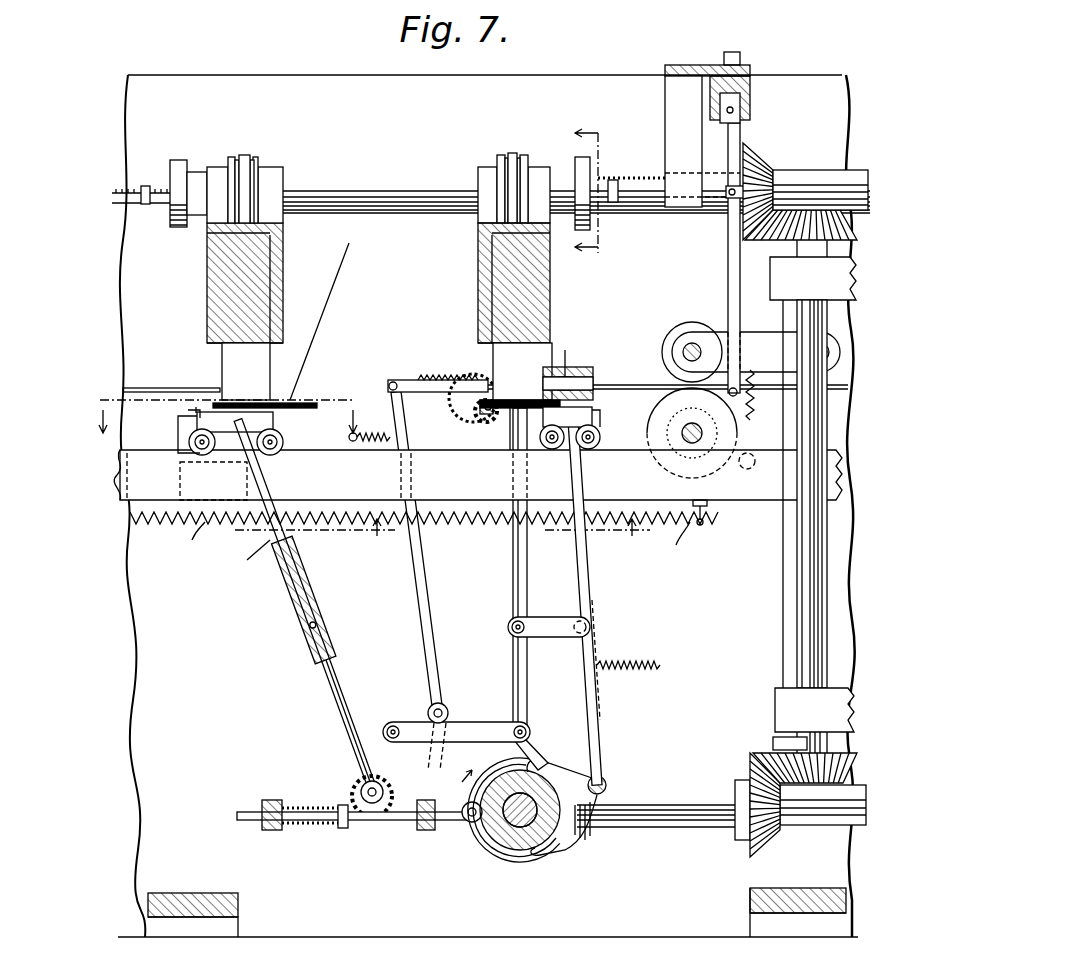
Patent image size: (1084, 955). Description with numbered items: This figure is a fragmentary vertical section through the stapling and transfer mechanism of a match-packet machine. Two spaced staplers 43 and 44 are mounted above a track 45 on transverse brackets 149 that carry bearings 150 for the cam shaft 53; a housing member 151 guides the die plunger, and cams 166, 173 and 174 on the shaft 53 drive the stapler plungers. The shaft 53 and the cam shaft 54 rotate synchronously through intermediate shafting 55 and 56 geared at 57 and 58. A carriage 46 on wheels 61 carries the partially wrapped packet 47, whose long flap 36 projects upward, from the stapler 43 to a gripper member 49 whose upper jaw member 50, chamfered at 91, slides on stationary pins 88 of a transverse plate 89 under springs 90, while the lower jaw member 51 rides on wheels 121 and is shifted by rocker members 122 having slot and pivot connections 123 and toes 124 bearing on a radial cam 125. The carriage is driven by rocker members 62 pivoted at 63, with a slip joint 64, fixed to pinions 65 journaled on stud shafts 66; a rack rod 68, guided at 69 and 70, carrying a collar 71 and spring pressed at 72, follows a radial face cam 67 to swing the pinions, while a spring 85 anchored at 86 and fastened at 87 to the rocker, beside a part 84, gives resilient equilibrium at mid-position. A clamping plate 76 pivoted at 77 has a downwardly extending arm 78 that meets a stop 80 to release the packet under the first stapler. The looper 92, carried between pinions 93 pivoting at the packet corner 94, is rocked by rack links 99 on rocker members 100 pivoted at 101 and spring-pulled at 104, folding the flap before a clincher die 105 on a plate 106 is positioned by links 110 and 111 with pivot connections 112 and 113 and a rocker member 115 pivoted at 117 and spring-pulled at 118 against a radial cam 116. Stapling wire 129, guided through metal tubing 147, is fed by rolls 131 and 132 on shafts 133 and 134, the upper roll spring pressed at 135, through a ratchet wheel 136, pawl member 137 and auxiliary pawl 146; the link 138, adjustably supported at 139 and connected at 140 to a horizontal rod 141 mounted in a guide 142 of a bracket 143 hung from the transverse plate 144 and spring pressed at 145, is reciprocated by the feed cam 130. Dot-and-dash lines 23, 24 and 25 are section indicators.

The section line 23 is at (597, 191).
The section line 24 is at (442, 538).
The section line 25 is at (225, 414).
The long flap 36 is at (318, 328).
The stapler 43 is at (283, 250).
The stapler 44 is at (478, 265).
The track 45 is at (478, 475).
The carriage 46 is at (273, 422).
The partially wrapped packet 47 is at (300, 403).
The gripper member 49 is at (520, 375).
The upper jaw member 50 is at (593, 385).
The lower jaw member 51 is at (592, 418).
The shaft 53 is at (368, 189).
The shaft 54 is at (510, 835).
The intermediate shafting 55 is at (783, 630).
The intermediate shafting 56 is at (680, 803).
The gearing 57 is at (765, 245).
The gearing 58 is at (756, 752).
The wheels 61 is at (284, 442).
The rocker members 62 is at (330, 692).
The pivot connection 63 is at (236, 425).
The slip joint 64 is at (282, 610).
The pinions 65 is at (392, 786).
The stud shafts 66 is at (362, 790).
The radial face cam 67 is at (478, 845).
The rack rod 68 is at (378, 822).
The guide 69 is at (426, 832).
The guide 70 is at (272, 831).
The collar 71 is at (342, 830).
The spring 72 is at (310, 826).
The plate 76 is at (215, 404).
The pivot 77 is at (194, 408).
The downwardly extending arm 78 is at (188, 410).
The stop 80 is at (178, 430).
The rack 84 is at (236, 526).
The spring 85 is at (432, 545).
The anchor point 86 is at (705, 518).
The intermediate point 87 is at (248, 559).
The stationary pins 88 is at (567, 360).
The transverse plate 89 is at (580, 367).
The springs 90 is at (548, 367).
The chamfer 91 is at (512, 420).
The looper 92 is at (476, 415).
The pinions 93 is at (450, 402).
The upper corner 94 is at (472, 374).
The rack links 99 is at (440, 378).
The rocker members 100 is at (425, 590).
The pivot 101 is at (444, 704).
The spring 104 is at (366, 432).
The clincher die 105 is at (500, 418).
The plate 106 is at (520, 558).
The links 110 is at (485, 720).
The links 111 is at (548, 616).
The fixed pivot connections 112 is at (393, 725).
The pivot connections 113 is at (528, 728).
The rocker member 115 is at (582, 665).
The radial cam 116 is at (548, 855).
The pivot 117 is at (606, 782).
The spring 118 is at (632, 658).
The wheels 121 is at (552, 450).
The rocker members 122 is at (590, 575).
The slot and pivot connections 123 is at (585, 475).
The toe 124 is at (540, 762).
The radial cam 125 is at (462, 806).
The wire 129 is at (830, 391).
The feed cam 130 is at (175, 160).
The upper roll 131 is at (695, 335).
The lower roll 132 is at (600, 428).
The shaft 133 is at (680, 342).
The fixed shaft 134 is at (698, 442).
The spring 135 is at (758, 392).
The ratchet wheel 136 is at (672, 460).
The pawl member 137 is at (736, 397).
The link 138 is at (740, 312).
The vertically adjustable pivot support 139 is at (742, 118).
The slot and pin pivot connection 140 is at (724, 200).
The horizontal rod 141 is at (165, 212).
The horizontal guide 142 is at (676, 212).
The bracket 143 is at (665, 130).
The transverse plate 144 is at (690, 64).
The spring 145 is at (112, 200).
The auxiliary pawl 146 is at (757, 458).
The metal tubing 147 is at (125, 388).
The transverse brackets 149 is at (207, 268).
The bearings 150 is at (283, 172).
The housing member 151 is at (222, 358).
The cams 166 is at (236, 160).
The cam 173 is at (230, 158).
The cam 174 is at (245, 155).